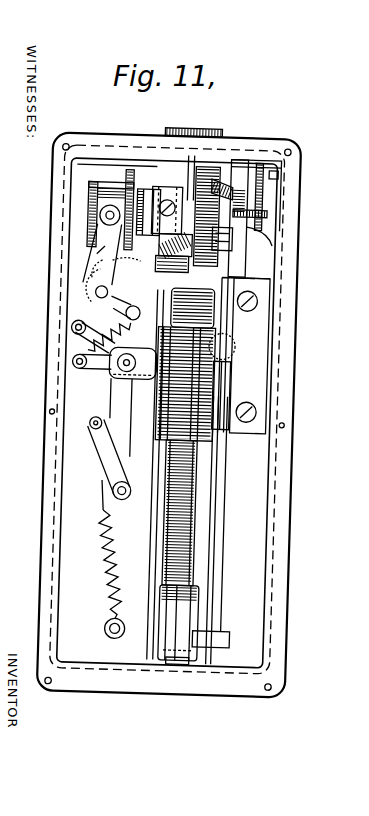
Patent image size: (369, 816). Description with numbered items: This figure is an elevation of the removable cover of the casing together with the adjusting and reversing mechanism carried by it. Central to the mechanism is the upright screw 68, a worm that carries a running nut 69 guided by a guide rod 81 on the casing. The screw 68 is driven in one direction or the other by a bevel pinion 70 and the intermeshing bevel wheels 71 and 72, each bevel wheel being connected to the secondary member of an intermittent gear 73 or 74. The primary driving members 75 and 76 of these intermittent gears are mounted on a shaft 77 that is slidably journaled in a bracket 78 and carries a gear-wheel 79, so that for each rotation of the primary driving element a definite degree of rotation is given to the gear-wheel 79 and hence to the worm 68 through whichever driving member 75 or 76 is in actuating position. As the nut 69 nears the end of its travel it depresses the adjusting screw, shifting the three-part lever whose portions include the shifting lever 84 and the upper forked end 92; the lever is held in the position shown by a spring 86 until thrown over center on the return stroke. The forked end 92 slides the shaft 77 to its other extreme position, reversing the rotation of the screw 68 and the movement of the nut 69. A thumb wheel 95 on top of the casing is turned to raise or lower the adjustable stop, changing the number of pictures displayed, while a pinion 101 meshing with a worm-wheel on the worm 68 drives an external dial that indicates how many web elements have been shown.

The upright screw 68 is at (196, 478).
The running nut 69 is at (193, 603).
The bevel pinion 70 is at (153, 260).
The bevel wheel 71 is at (223, 181).
The bevel wheel 72 is at (163, 186).
The intermittent gear 73 is at (242, 201).
The intermittent gear 74 is at (93, 254).
The driving member 75 is at (262, 204).
The driving member 76 is at (127, 181).
The shaft 77 is at (273, 246).
The bracket 78 is at (268, 279).
The gear-wheel 79 is at (201, 173).
The guide rod 81 is at (218, 525).
The shifting lever 84 is at (120, 403).
The spring 86 is at (106, 537).
The forked end 92 is at (97, 254).
The thumb wheel 95 is at (193, 119).
The pinion 101 is at (240, 349).